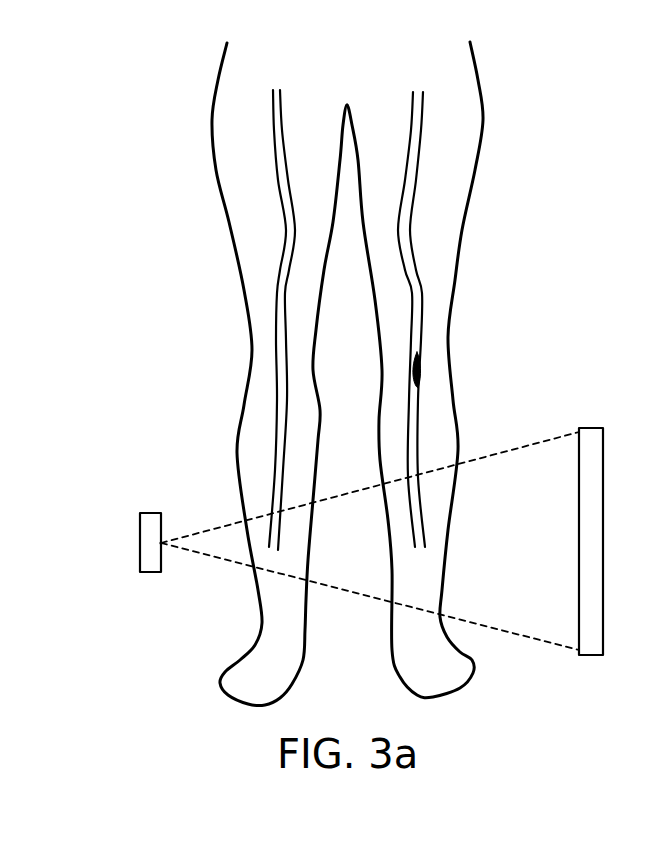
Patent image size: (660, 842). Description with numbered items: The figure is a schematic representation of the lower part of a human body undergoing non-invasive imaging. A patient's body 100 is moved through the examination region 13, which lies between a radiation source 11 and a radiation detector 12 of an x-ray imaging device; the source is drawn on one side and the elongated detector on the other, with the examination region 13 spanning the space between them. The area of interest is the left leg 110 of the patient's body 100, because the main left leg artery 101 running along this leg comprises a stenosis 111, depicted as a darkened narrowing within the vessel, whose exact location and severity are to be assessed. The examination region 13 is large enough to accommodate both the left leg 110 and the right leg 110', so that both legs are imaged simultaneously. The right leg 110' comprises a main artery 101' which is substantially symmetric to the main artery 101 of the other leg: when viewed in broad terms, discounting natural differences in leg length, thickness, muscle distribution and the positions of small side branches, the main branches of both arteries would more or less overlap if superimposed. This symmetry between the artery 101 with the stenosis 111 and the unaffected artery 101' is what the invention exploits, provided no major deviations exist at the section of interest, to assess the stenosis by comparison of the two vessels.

The patient's body 100 is at (125, 129).
The left leg 110 is at (451, 370).
The right leg 110' is at (241, 374).
The main left leg artery 101 is at (467, 319).
The main artery 101' is at (224, 320).
The stenosis 111 is at (420, 372).
The radiation source 11 is at (150, 512).
The radiation detector 12 is at (588, 658).
The examination region 13 is at (342, 553).